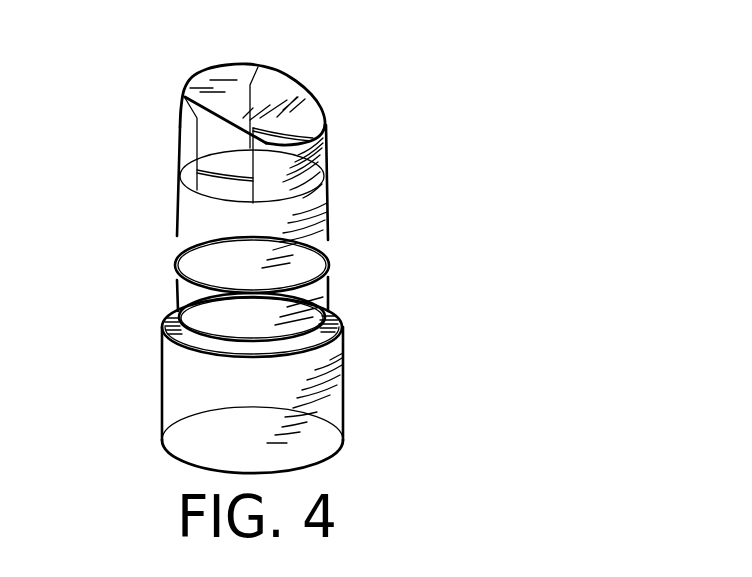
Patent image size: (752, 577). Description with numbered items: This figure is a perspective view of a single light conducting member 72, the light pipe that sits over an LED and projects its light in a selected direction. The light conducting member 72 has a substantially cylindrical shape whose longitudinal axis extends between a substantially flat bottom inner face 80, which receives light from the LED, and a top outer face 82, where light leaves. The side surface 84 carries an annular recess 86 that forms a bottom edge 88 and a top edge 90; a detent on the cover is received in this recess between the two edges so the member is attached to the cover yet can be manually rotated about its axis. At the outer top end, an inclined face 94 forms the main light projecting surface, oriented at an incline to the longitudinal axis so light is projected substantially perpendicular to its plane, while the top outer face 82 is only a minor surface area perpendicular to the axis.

The light conducting member 72 is at (330, 208).
The bottom inner face 80 is at (318, 462).
The top outer face 82 is at (210, 78).
The side surface 84 is at (330, 242).
The annular recess 86 is at (330, 290).
The bottom edge 88 is at (341, 327).
The top edge 90 is at (330, 265).
The inclined face 94 is at (278, 95).